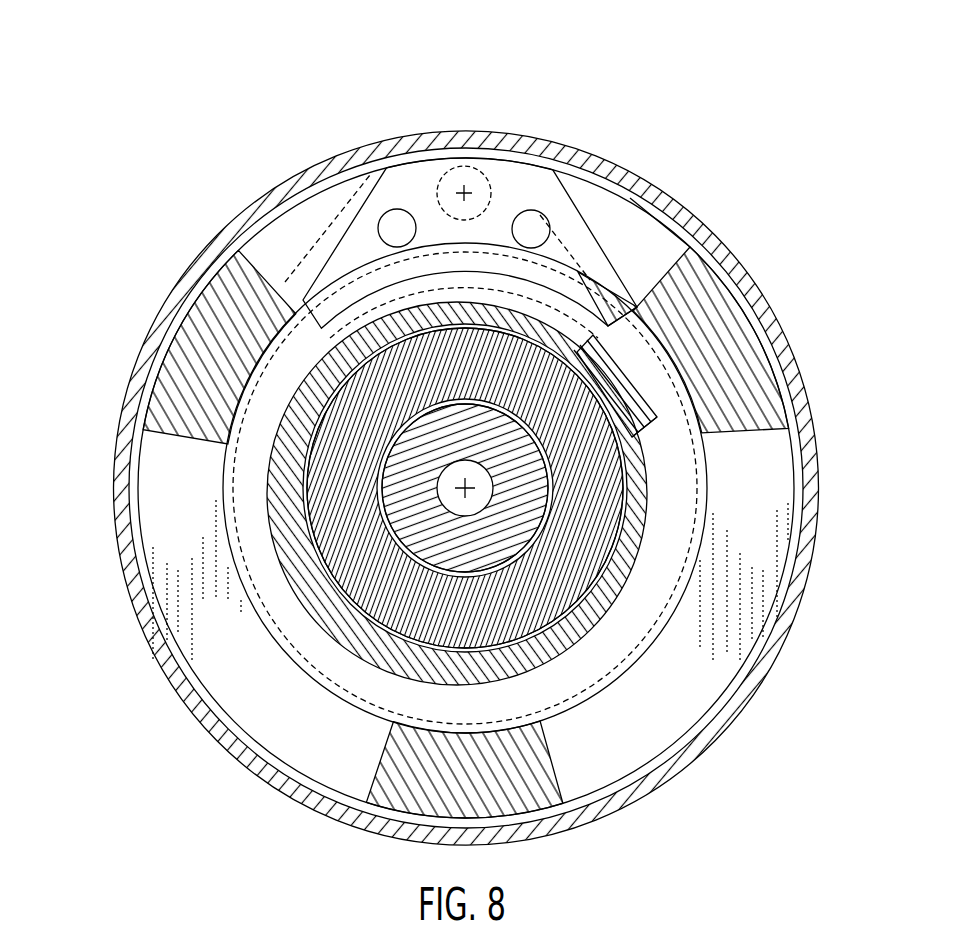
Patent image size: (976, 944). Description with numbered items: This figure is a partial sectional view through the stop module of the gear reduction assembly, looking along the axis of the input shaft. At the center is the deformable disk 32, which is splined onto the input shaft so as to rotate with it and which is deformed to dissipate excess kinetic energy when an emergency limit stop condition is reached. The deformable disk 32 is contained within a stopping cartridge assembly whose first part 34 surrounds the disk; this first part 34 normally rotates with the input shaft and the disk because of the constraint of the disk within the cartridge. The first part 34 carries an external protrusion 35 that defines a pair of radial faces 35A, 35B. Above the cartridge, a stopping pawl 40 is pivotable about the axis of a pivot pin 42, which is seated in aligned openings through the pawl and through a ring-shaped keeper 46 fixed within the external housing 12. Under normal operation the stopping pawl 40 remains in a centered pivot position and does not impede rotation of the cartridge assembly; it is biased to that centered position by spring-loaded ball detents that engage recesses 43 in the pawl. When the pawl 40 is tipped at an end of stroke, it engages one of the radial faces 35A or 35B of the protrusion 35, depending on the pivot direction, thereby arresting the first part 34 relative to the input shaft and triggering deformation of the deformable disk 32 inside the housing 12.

The housing 12 is at (137, 372).
The deformable disk 32 is at (375, 590).
The first part 34 is at (553, 642).
The external protrusion 35 is at (630, 368).
The radial face 35A is at (597, 340).
The radial face 35B is at (637, 420).
The stopping pawl 40 is at (608, 275).
The pivot pin 42 is at (464, 193).
The recesses 43 is at (397, 228).
The ring-shaped keeper 46 is at (747, 362).